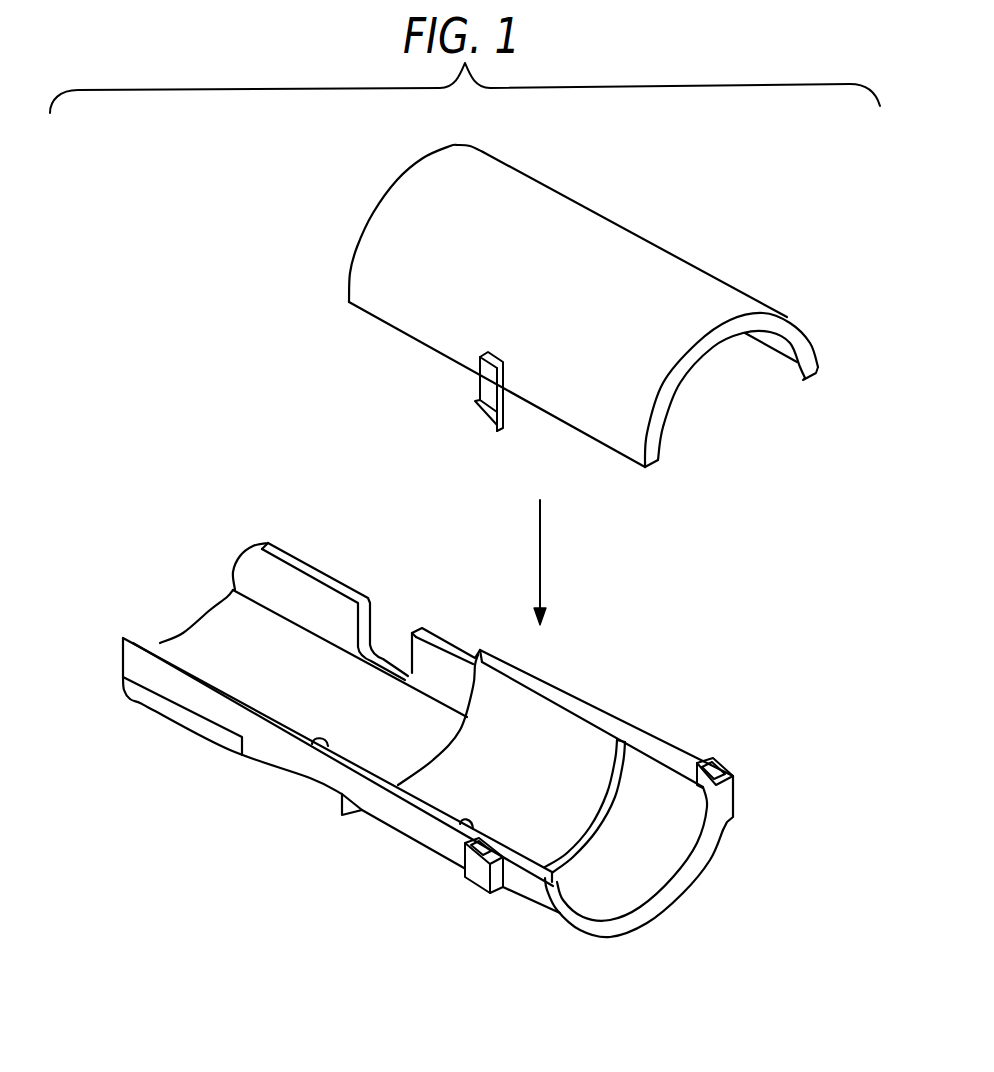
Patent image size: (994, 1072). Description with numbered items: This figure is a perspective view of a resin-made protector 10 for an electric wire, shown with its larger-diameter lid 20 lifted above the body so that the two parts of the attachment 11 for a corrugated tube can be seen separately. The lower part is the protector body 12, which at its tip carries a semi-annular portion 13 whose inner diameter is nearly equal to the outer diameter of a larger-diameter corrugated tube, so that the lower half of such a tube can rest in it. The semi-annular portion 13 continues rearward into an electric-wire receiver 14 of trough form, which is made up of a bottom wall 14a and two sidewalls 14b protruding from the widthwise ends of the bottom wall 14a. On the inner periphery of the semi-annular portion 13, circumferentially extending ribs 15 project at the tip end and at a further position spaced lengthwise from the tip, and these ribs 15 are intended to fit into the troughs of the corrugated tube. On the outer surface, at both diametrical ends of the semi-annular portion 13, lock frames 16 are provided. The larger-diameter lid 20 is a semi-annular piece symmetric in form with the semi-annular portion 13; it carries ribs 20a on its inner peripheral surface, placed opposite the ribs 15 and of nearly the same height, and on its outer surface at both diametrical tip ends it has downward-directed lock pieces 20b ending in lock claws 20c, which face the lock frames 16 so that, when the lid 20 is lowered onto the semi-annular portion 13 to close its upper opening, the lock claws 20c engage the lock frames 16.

The protector 10 is at (212, 478).
The attachment 11 is at (673, 518).
The protector body 12 is at (287, 550).
The semi-annular portion 13 is at (553, 735).
The electric-wire receiver 14 is at (306, 705).
The bottom wall 14a is at (227, 677).
The sidewalls 14b is at (257, 572).
The ribs 15 is at (585, 835).
The lock frames 16 is at (720, 767).
The larger-diameter lid 20 is at (602, 420).
The ribs 20a is at (797, 377).
The lock pieces 20b is at (483, 385).
The lock claws 20c is at (485, 415).